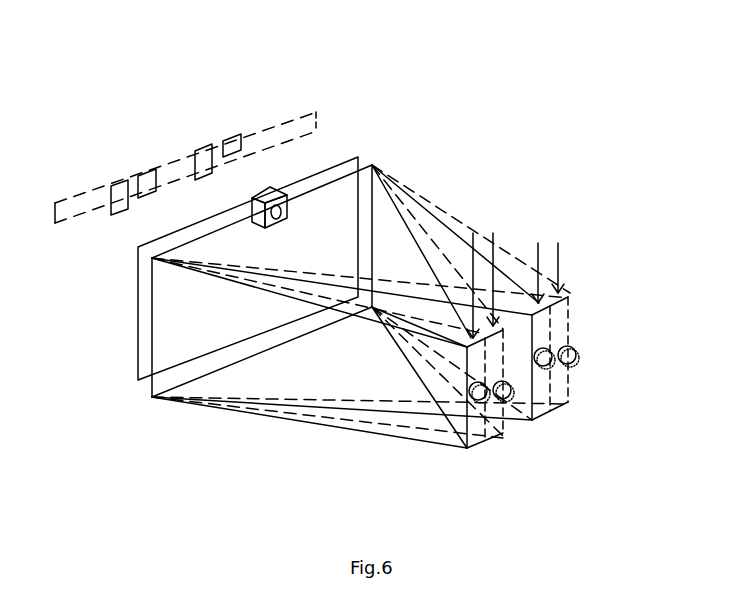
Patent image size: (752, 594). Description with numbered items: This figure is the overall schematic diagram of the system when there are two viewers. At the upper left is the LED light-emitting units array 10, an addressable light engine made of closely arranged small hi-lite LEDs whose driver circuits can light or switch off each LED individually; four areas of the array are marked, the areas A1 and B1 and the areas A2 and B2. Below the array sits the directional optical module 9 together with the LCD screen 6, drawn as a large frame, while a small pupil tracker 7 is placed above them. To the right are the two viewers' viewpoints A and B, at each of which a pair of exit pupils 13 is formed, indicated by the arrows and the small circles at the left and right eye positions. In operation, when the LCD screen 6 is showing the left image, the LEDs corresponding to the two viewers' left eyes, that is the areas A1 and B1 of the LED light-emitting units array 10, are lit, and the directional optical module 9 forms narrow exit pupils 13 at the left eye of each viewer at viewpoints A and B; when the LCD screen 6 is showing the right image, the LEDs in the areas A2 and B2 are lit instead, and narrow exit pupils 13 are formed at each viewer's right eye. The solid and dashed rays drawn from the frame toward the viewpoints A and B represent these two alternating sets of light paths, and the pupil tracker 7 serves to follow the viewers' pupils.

The LCD screen 6 is at (150, 367).
The pupil tracker 7 is at (273, 190).
The directional optical module 9 is at (138, 292).
The LED light-emitting units array 10 is at (322, 40).
The exit pupils 13 is at (515, 285).
The viewer's viewpoint A is at (503, 392).
The viewer's viewpoint B is at (568, 359).
The area A1 is at (117, 188).
The area A2 is at (145, 177).
The area B1 is at (199, 151).
The area B2 is at (231, 135).